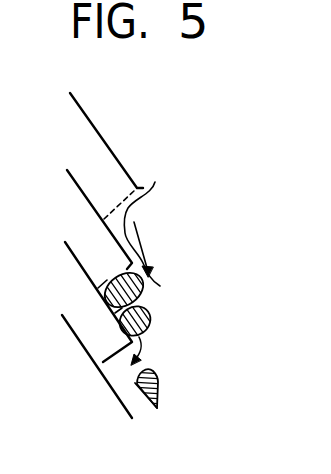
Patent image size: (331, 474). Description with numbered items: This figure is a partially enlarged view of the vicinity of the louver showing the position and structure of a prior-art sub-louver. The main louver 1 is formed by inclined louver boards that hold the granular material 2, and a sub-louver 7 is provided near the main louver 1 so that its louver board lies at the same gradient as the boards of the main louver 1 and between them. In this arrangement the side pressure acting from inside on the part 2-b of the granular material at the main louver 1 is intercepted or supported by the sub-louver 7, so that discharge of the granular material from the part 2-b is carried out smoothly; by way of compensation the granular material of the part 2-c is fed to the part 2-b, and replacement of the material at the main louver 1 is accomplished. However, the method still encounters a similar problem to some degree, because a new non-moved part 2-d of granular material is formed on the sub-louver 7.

The main louver 1 is at (98, 132).
The granular material 2 is at (163, 205).
The sub-louver 7 is at (148, 242).
The part of granular material 2-c is at (160, 286).
The part of granular material at main louver 2-b is at (152, 328).
The new non-moved part 2-d is at (158, 381).